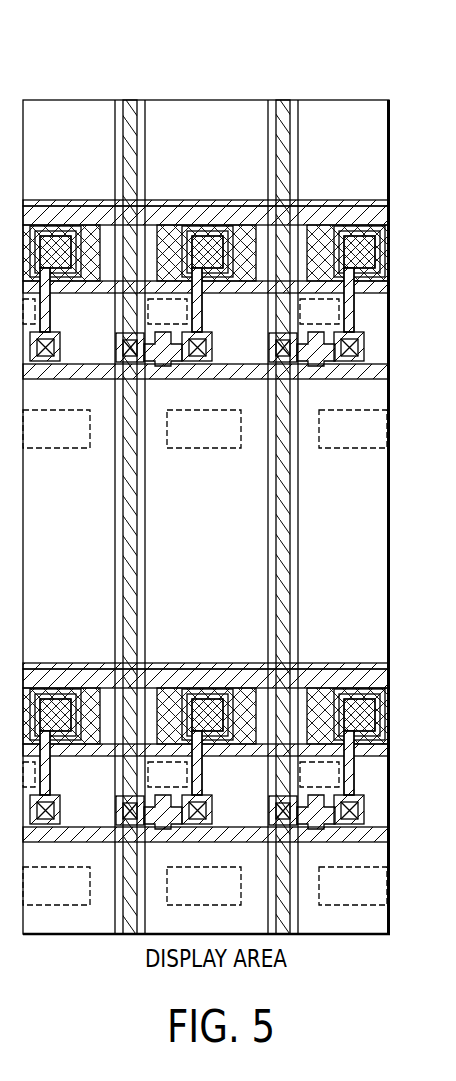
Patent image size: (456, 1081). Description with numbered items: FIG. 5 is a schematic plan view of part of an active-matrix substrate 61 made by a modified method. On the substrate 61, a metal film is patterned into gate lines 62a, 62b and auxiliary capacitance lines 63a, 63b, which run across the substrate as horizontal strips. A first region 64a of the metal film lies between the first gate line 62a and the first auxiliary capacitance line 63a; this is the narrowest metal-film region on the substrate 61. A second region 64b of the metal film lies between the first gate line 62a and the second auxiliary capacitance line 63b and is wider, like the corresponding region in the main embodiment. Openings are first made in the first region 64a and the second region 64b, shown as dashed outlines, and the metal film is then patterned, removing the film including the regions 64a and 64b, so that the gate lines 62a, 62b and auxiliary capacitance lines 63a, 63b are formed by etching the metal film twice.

The active-matrix substrate 61 is at (206, 62).
The first gate line 62a is at (377, 371).
The second gate line 62b is at (380, 837).
The first auxiliary capacitance line 63a is at (378, 215).
The second auxiliary capacitance line 63b is at (378, 679).
The first region of the metal film 64a is at (204, 312).
The second region of the metal film 64b is at (210, 442).